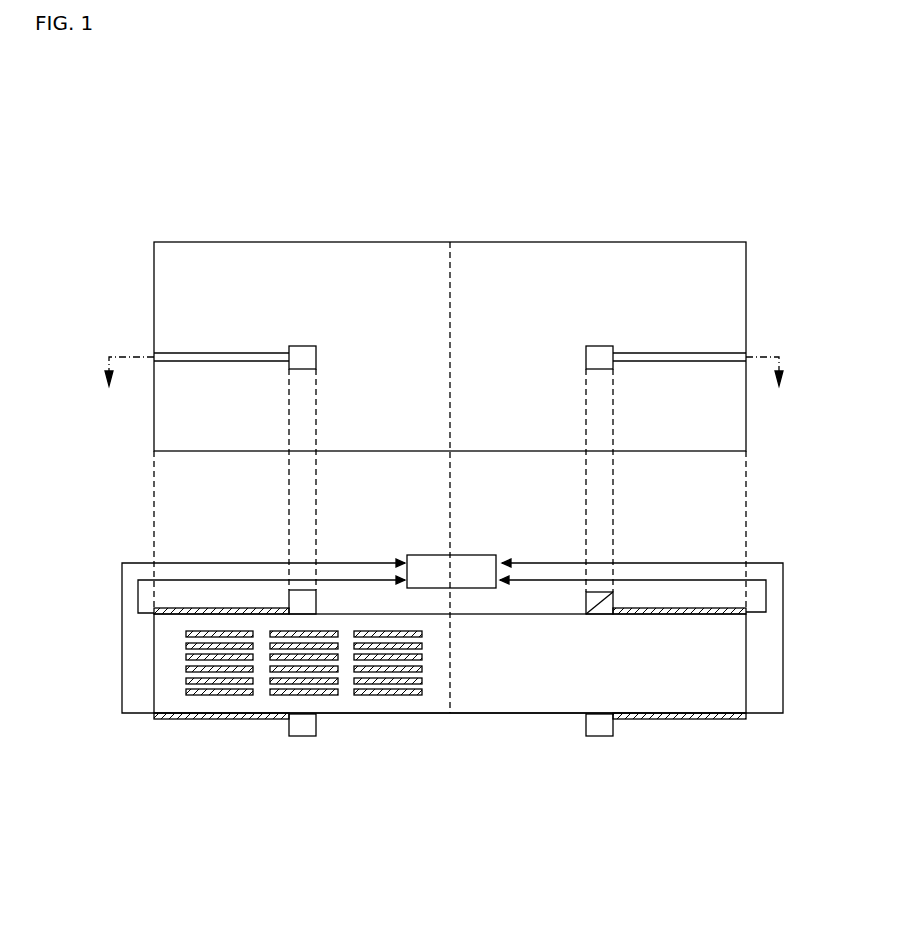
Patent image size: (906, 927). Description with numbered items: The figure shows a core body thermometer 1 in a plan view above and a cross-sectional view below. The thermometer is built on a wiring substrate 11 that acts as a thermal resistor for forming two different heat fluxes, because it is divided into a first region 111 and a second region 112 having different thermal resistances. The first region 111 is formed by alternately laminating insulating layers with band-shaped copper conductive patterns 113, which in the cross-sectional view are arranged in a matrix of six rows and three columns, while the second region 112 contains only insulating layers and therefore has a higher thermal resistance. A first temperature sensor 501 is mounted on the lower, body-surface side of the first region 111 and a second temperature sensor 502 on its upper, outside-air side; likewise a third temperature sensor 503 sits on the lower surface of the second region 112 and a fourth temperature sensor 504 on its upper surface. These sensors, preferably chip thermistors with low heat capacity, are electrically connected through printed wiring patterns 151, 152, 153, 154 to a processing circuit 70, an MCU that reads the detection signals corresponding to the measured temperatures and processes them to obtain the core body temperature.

The core body thermometer 1 is at (559, 189).
The wiring substrate 11 is at (496, 797).
The first region 111 is at (414, 728).
The second region 112 is at (485, 728).
The conductive patterns 113 is at (422, 632).
The processing circuit 70 is at (450, 554).
The wiring pattern 151 is at (173, 719).
The wiring pattern 152 is at (225, 607).
The wiring pattern 153 is at (686, 719).
The wiring pattern 154 is at (694, 607).
The first temperature sensor 501 is at (300, 736).
The second temperature sensor 502 is at (305, 346).
The third temperature sensor 503 is at (597, 736).
The fourth temperature sensor 504 is at (600, 346).